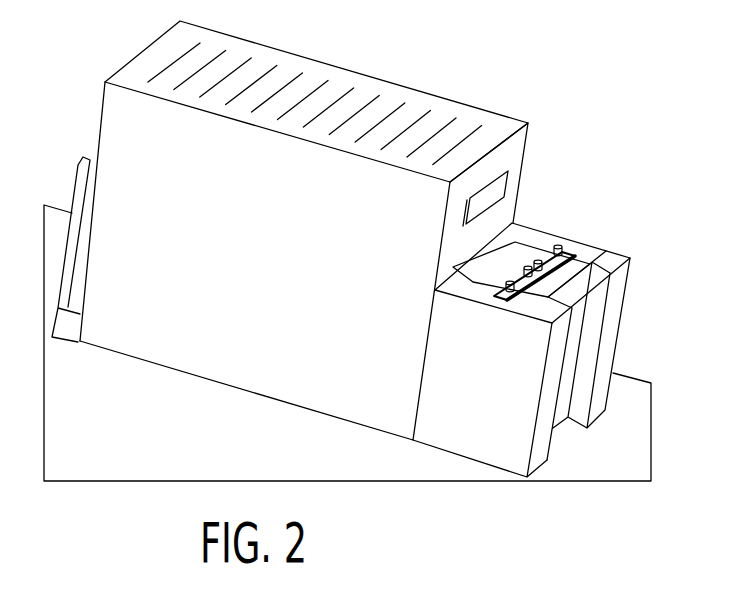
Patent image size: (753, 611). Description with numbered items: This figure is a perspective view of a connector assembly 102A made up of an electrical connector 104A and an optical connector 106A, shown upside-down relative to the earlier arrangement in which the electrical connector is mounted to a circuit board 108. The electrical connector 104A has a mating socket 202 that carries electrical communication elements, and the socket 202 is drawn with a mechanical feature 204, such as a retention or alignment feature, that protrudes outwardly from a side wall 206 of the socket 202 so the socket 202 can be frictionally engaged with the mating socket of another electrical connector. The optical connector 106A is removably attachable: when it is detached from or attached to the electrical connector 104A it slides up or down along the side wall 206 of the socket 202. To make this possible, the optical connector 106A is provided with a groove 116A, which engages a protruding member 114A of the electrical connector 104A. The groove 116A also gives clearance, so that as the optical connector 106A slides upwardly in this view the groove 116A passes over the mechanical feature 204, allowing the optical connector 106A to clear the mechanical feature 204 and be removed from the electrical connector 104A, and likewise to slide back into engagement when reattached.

The connector assembly 102A is at (481, 383).
The electrical connector 104A is at (392, 437).
The optical connector 106A is at (468, 460).
The circuit board 108 is at (110, 467).
The protruding member 114A is at (470, 268).
The groove 116A is at (487, 247).
The mating socket 202 is at (322, 277).
The mechanical feature 204 is at (508, 174).
The side wall 206 is at (455, 212).